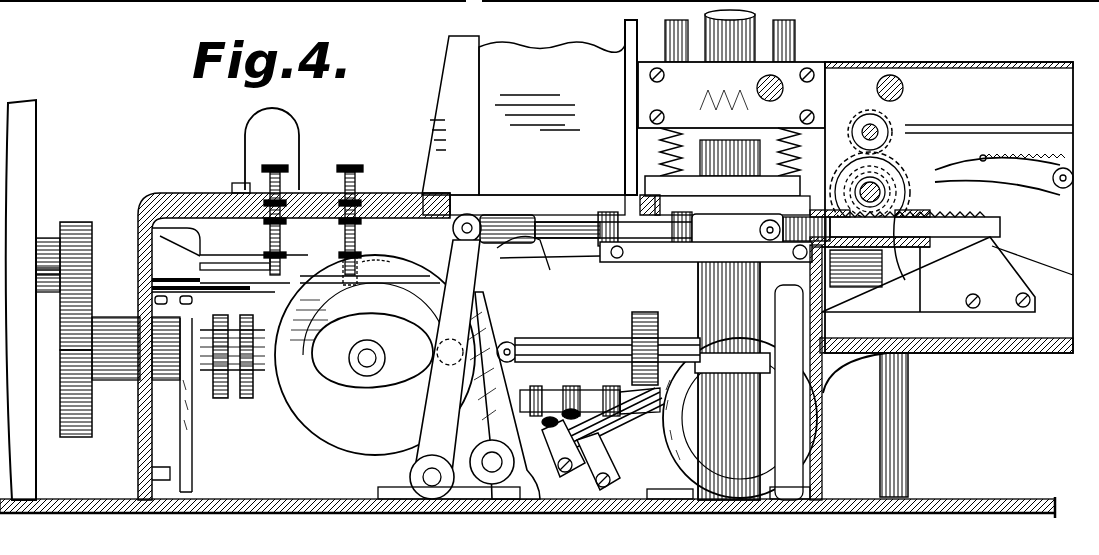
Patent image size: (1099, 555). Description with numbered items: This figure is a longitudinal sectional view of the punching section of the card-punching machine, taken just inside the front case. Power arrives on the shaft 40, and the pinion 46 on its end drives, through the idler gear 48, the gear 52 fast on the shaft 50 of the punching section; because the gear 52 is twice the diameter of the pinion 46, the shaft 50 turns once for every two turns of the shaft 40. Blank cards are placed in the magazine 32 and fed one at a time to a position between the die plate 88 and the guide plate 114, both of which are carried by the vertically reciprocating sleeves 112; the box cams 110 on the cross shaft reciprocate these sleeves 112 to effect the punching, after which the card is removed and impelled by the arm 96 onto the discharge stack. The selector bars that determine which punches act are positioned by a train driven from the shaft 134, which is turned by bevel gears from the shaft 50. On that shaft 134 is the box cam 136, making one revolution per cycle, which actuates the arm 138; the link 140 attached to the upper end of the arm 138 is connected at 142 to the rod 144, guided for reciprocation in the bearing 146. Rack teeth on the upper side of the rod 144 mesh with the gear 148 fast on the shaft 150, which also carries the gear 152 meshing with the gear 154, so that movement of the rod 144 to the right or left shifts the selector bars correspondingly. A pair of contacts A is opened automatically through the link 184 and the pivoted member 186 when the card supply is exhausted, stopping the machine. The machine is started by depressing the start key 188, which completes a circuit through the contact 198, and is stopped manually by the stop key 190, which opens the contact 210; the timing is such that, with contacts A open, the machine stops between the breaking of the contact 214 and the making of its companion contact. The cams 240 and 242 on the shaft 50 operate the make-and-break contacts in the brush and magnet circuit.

The magazine 32 is at (529, 107).
The shaft 40 is at (48, 240).
The pinion 46 is at (84, 222).
The idler gear 48 is at (65, 365).
The gear 52 is at (80, 437).
The die plate 88 is at (668, 200).
The arm 96 is at (955, 160).
The box cams 110 is at (822, 412).
The sleeves 112 is at (698, 287).
The guide plate 114 is at (690, 192).
The shaft 134 is at (368, 360).
The box cam 136 is at (312, 425).
The arm 138 is at (448, 322).
The link 140 is at (578, 226).
The connection 142 is at (772, 236).
The rod 144 is at (970, 232).
The bearing 146 is at (928, 300).
The gear 148 is at (895, 288).
The shaft 150 is at (892, 198).
The gear 152 is at (845, 175).
The gear 154 is at (860, 118).
The link 184 is at (640, 256).
The pivoted member 186 is at (832, 296).
The start key 188 is at (283, 165).
The stop key 190 is at (353, 165).
The contact 198 is at (270, 272).
The contact 210 is at (362, 268).
The make and break contact 214 is at (645, 422).
The cam 240 is at (220, 398).
The cam 242 is at (248, 398).
The shaft 50 is at (535, 352).
The contacts A is at (570, 240).